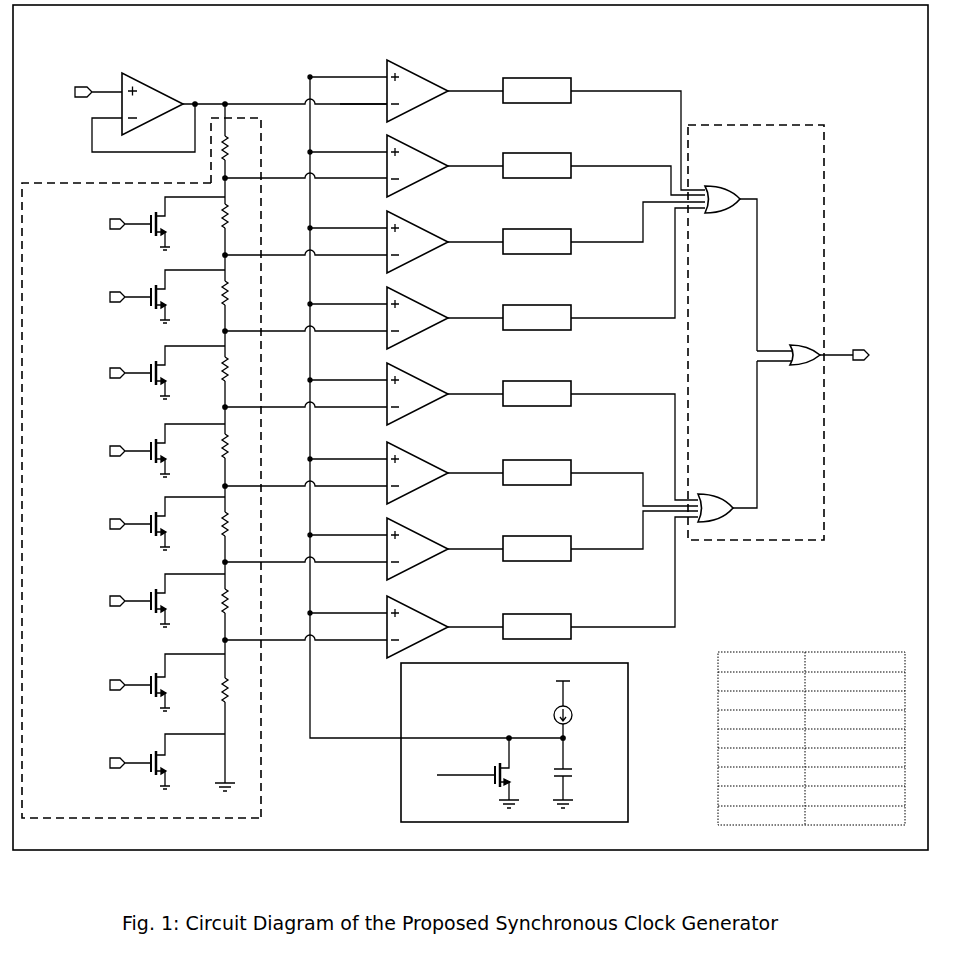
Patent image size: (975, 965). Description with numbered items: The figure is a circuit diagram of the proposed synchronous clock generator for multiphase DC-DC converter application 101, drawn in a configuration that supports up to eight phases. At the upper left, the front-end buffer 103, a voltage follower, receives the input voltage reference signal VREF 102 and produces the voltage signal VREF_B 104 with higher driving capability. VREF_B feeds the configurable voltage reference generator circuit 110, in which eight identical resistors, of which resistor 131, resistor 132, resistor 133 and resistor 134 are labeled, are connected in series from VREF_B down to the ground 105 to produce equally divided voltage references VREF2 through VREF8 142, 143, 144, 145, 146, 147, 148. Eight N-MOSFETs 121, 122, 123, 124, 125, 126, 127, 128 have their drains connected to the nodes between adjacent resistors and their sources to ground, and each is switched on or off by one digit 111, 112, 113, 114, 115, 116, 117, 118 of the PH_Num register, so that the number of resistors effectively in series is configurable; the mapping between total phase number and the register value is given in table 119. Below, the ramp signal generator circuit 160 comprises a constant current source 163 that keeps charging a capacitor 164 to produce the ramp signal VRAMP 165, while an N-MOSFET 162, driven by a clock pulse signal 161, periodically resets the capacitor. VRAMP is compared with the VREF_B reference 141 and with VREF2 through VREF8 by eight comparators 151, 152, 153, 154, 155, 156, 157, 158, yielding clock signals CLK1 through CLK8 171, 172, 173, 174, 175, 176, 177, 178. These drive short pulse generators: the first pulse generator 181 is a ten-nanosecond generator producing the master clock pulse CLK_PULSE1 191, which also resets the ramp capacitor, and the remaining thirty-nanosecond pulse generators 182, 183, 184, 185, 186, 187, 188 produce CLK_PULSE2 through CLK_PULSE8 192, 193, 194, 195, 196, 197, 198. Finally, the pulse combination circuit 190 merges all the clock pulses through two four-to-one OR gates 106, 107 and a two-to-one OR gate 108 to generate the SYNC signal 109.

The synchronous clock generator for multiphase DC-DC converter application 101 is at (470, 427).
The input voltage reference signal VREF 102 is at (77, 84).
The front-end buffer 103 is at (143, 107).
The voltage signal VREF_B 104 is at (285, 88).
The ground 105 is at (236, 461).
The 4-to-1 OR gate 106 is at (731, 260).
The 4-to-1 OR gate 107 is at (727, 441).
The 2-to-1 OR gate 108 is at (805, 366).
The SYNC signal 109 is at (881, 366).
The configurable voltage reference generator circuit 110 is at (141, 500).
The register digit of PH_Num 111 is at (91, 217).
The register digit of PH_Num 112 is at (91, 290).
The register digit of PH_Num 113 is at (91, 366).
The register digit of PH_Num 114 is at (91, 444).
The register digit of PH_Num 115 is at (91, 517).
The register digit of PH_Num 116 is at (91, 594).
The register digit of PH_Num 117 is at (91, 678).
The register digit of PH_Num 118 is at (91, 756).
The table 119 is at (811, 726).
The N-MOSFET 121 is at (188, 223).
The N-MOSFET 122 is at (188, 296).
The N-MOSFET 123 is at (188, 372).
The N-MOSFET 124 is at (188, 450).
The N-MOSFET 125 is at (188, 523).
The N-MOSFET 126 is at (188, 600).
The N-MOSFET 127 is at (188, 682).
The N-MOSFET 128 is at (188, 761).
The resistor 131 is at (240, 421).
The resistor 132 is at (240, 218).
The resistor 133 is at (240, 295).
The resistor 134 is at (240, 371).
The voltage reference VREF_B input 141 is at (363, 107).
The voltage reference VREF2 142 is at (306, 181).
The voltage reference VREF3 143 is at (306, 258).
The voltage reference VREF4 144 is at (306, 334).
The voltage reference VREF5 145 is at (306, 410).
The voltage reference VREF6 146 is at (306, 489).
The voltage reference VREF7 147 is at (306, 565).
The voltage reference VREF8 148 is at (306, 643).
The comparator 151 is at (379, 91).
The comparator 152 is at (379, 166).
The comparator 153 is at (379, 242).
The comparator 154 is at (379, 318).
The comparator 155 is at (379, 394).
The comparator 156 is at (379, 473).
The comparator 157 is at (379, 549).
The comparator 158 is at (379, 627).
The ramp signal generator circuit 160 is at (514, 742).
The clock pulse signal 161 is at (465, 777).
The N-MOSFET 162 is at (517, 772).
The constant current source 163 is at (578, 705).
The capacitor 164 is at (578, 773).
The ramp signal VRAMP 165 is at (435, 416).
The clock signal CLK1 171 is at (475, 93).
The clock signal CLK2 172 is at (475, 168).
The clock signal CLK3 173 is at (475, 244).
The clock signal CLK4 174 is at (475, 320).
The clock signal CLK5 175 is at (475, 396).
The clock signal CLK6 176 is at (475, 475).
The clock signal CLK7 177 is at (475, 551).
The clock signal CLK8 178 is at (475, 629).
The 10-ns pulse generator 181 is at (537, 99).
The 30-ns pulse generator 182 is at (537, 174).
The 30-ns pulse generator 183 is at (537, 250).
The 30-ns pulse generator 184 is at (537, 326).
The 30-ns pulse generator 185 is at (537, 402).
The 30-ns pulse generator 186 is at (537, 481).
The 30-ns pulse generator 187 is at (537, 557).
The 30-ns pulse generator 188 is at (537, 635).
The pulse combination circuit 190 is at (756, 332).
The clock pulse signal CLK_PULSE1 191 is at (638, 133).
The clock pulse signal CLK_PULSE2 192 is at (638, 173).
The clock pulse signal CLK_PULSE3 193 is at (638, 230).
The clock pulse signal CLK_PULSE4 194 is at (638, 271).
The clock pulse signal CLK_PULSE5 195 is at (634, 439).
The clock pulse signal CLK_PULSE6 196 is at (634, 482).
The clock pulse signal CLK_PULSE7 197 is at (634, 538).
The clock pulse signal CLK_PULSE8 198 is at (634, 580).